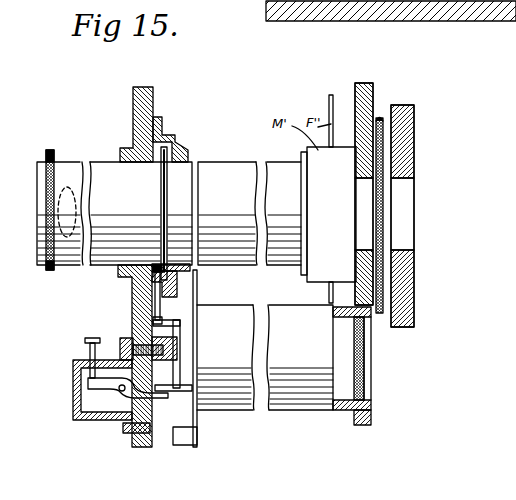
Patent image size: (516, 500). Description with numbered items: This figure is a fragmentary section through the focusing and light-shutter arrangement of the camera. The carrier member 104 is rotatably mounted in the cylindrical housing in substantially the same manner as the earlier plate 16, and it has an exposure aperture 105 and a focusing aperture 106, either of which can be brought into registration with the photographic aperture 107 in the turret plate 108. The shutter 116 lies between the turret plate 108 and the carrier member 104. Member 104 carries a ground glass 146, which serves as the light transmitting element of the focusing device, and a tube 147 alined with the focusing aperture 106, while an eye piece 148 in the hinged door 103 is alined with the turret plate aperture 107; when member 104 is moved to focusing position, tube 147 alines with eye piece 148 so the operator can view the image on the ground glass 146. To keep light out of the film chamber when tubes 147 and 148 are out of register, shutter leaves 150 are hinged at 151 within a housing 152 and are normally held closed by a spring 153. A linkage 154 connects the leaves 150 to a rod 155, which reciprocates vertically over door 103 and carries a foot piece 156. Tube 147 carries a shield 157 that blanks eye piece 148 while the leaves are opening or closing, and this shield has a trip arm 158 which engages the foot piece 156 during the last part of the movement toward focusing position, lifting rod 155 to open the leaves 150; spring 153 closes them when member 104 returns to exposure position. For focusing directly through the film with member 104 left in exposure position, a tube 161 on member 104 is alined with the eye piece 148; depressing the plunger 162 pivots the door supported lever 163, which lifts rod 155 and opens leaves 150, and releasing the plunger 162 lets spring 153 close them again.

The plate 16 is at (167, 130).
The hinged door 103 is at (133, 97).
The carrier member 104 is at (373, 95).
The exposure aperture 105 is at (365, 190).
The focusing aperture 106 is at (371, 372).
The photographic aperture 107 is at (405, 210).
The turret plate 108 is at (412, 153).
The shutter 116 is at (383, 130).
The ground glass 146 is at (364, 362).
The tube 147 is at (265, 357).
The eye piece 148 is at (87, 253).
The shutter leaves 150 is at (170, 160).
The hinge 151 is at (170, 272).
The housing 152 is at (168, 297).
The spring 153 is at (152, 272).
The linkage 154 is at (157, 308).
The rod 155 is at (166, 354).
The foot piece 156 is at (185, 387).
The shield 157 is at (197, 295).
The trip arm 158 is at (185, 438).
The tube 161 is at (242, 165).
The plunger 162 is at (97, 338).
The lever 163 is at (107, 383).